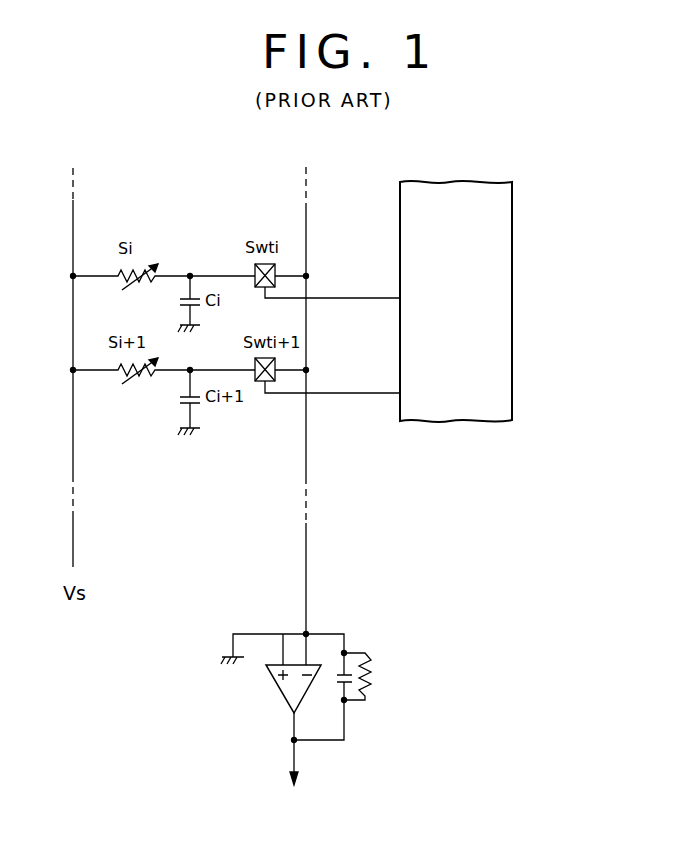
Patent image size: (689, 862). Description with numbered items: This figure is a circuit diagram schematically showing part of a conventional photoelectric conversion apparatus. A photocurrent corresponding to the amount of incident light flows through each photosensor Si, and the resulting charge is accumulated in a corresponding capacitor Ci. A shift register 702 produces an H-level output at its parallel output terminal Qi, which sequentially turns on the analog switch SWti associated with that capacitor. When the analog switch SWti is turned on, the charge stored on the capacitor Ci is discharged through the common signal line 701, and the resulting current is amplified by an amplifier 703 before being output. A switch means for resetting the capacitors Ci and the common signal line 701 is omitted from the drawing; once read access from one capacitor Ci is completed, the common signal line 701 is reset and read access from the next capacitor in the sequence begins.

The common signal line 701 is at (306, 455).
The shift register 702 is at (512, 262).
The amplifier 703 is at (272, 683).